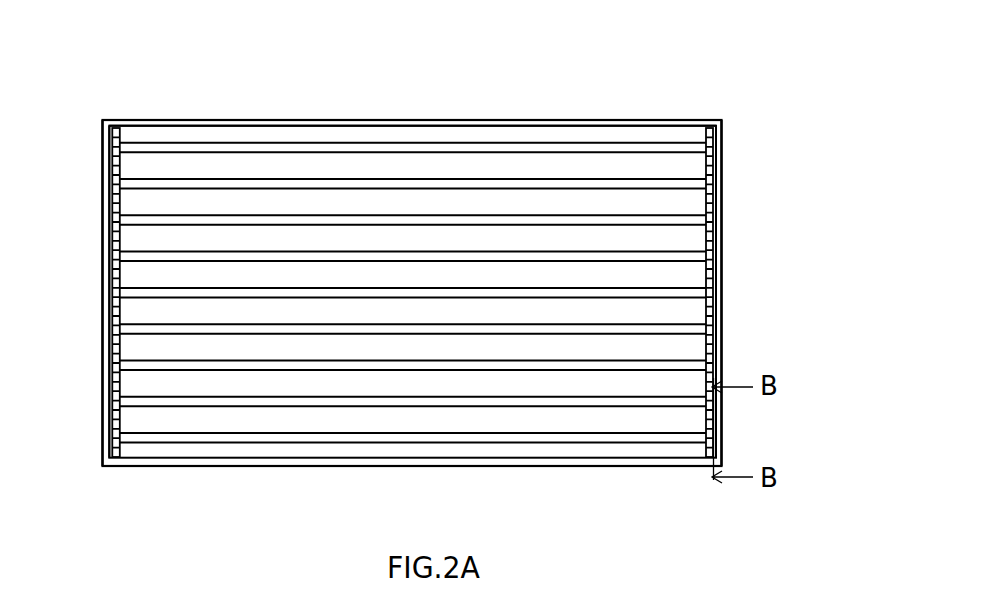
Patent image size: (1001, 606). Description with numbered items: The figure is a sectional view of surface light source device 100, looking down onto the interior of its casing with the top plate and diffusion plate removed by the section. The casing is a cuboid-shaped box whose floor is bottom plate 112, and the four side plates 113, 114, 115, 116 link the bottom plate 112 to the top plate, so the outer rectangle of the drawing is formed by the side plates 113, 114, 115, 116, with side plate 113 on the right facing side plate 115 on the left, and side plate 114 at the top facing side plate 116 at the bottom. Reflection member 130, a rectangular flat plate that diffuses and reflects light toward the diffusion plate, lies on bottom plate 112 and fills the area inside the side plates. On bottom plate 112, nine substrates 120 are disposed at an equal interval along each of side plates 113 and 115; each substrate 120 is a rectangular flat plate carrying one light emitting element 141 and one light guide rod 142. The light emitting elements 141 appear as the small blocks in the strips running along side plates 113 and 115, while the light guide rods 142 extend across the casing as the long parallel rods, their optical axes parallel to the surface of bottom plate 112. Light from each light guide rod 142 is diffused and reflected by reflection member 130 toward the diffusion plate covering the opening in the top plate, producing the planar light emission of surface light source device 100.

The surface light source device 100 is at (728, 36).
The bottom plate 112 is at (313, 133).
The side plate 113 is at (722, 312).
The side plate 114 is at (449, 120).
The side plate 115 is at (102, 300).
The side plate 116 is at (513, 467).
The substrate 120 is at (110, 141).
The reflection member 130 is at (136, 135).
The light emitting element 141 is at (112, 148).
The light guide rod 142 is at (180, 148).